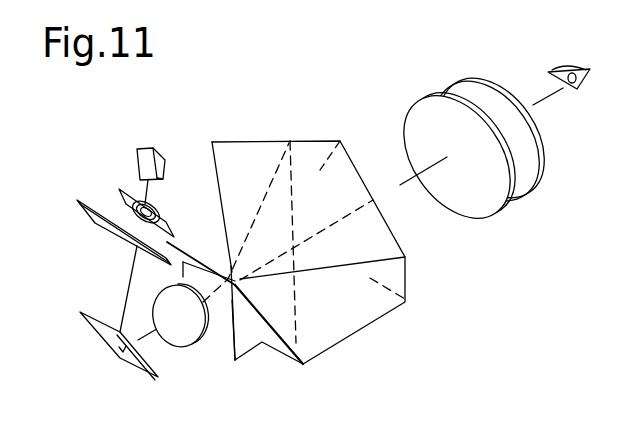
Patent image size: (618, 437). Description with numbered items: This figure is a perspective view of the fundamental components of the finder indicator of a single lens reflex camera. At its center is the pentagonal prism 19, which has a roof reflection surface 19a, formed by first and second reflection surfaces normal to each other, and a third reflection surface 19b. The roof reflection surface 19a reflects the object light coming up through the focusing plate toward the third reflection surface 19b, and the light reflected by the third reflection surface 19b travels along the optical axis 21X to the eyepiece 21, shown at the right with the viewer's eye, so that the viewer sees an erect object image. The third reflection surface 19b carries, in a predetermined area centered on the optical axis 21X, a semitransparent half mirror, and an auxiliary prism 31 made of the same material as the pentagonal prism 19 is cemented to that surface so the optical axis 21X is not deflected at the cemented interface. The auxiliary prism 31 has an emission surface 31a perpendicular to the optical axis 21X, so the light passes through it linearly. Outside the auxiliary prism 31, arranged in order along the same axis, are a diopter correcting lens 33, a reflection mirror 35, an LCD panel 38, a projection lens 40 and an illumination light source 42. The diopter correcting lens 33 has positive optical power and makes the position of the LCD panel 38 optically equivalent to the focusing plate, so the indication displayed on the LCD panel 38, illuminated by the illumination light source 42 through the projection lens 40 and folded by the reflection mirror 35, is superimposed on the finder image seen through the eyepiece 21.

The pentagonal prism 19 is at (309, 131).
The roof reflection surface 19a is at (230, 161).
The third reflection surface 19b is at (278, 345).
The eyepiece 21 is at (558, 196).
The optical axis of the eyepiece 21X is at (403, 188).
The auxiliary prism 31 is at (243, 343).
The emission surface 31a is at (220, 341).
The diopter correcting lens 33 is at (179, 350).
The reflection mirror 35 is at (138, 367).
The LCD panel 38 is at (78, 200).
The projection lens 40 is at (120, 189).
The illumination light source 42 is at (135, 152).